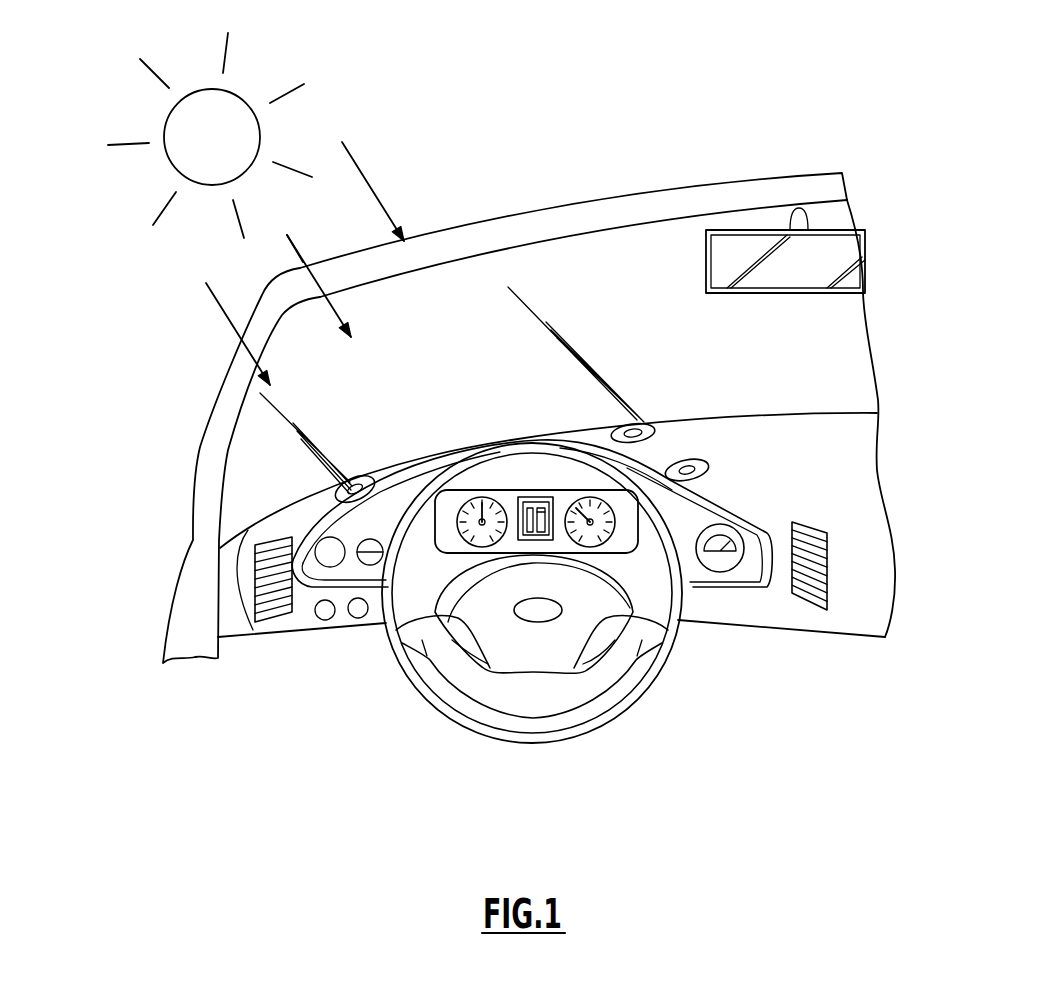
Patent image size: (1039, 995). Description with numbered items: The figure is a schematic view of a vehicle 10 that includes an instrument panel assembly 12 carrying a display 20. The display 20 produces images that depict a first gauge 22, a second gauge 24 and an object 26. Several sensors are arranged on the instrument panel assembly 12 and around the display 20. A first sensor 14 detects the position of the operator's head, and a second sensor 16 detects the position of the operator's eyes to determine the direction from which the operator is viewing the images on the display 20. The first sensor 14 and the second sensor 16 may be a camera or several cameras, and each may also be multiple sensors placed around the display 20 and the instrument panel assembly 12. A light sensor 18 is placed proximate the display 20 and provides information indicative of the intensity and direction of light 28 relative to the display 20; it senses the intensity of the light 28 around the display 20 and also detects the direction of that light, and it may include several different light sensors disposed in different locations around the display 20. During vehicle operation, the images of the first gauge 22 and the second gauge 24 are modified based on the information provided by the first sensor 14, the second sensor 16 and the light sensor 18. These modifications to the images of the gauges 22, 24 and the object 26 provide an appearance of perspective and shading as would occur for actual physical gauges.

The vehicle 10 is at (148, 440).
The instrument panel assembly 12 is at (710, 435).
The first sensor 14 is at (704, 473).
The second sensor 16 is at (368, 478).
The light sensor 18 is at (620, 424).
The display 20 is at (547, 534).
The first gauge 22 is at (460, 540).
The second gauge 24 is at (623, 537).
The object 26 is at (530, 541).
The light 28 is at (393, 133).